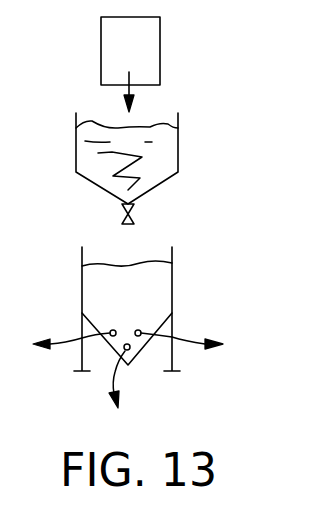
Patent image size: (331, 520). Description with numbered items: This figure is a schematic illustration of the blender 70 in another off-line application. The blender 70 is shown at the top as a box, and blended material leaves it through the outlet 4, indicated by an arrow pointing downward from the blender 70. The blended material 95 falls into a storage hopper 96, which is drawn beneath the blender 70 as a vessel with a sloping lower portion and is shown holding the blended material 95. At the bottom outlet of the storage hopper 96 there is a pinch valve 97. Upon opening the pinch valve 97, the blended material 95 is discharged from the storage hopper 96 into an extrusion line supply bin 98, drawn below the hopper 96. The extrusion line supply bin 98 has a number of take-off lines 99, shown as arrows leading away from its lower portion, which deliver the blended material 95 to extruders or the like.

The blender 70 is at (148, 50).
The outlet 4 is at (130, 93).
The storage hopper 96 is at (178, 132).
The blended material 95 is at (148, 163).
The pinch valve 97 is at (134, 214).
The extrusion line supply bin 98 is at (172, 283).
The take-off lines 99 is at (100, 333).